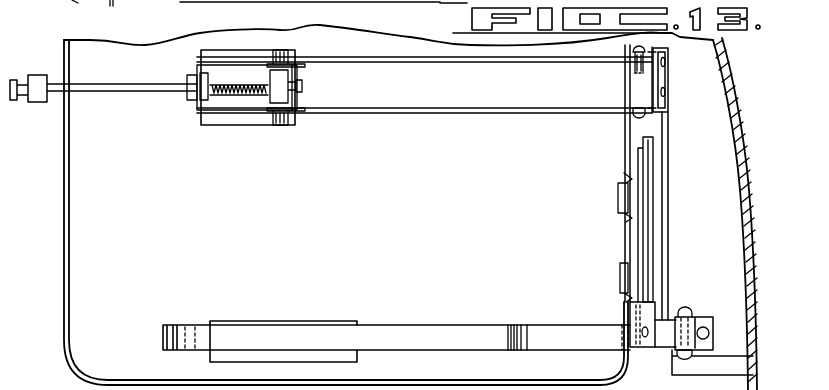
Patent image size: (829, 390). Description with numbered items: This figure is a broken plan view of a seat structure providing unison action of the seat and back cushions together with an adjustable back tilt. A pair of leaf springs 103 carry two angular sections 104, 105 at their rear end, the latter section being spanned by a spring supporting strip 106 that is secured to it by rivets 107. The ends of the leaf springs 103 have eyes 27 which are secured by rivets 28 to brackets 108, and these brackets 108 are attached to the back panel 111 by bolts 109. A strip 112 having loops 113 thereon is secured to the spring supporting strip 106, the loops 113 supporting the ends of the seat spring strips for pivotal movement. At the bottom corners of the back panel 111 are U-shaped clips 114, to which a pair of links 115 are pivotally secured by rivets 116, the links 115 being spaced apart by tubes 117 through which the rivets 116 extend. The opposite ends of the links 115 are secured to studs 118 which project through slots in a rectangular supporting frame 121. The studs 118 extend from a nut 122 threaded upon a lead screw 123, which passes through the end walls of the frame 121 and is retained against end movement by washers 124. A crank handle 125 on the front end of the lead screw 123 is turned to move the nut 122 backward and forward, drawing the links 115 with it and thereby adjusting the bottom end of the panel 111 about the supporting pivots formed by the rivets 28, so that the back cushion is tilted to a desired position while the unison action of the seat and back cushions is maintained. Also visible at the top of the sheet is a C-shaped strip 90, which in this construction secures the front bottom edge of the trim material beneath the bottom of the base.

The eyes 27 is at (707, 320).
The rivets 28 is at (700, 313).
The C-shaped strip 90 is at (76, 2).
The leaf springs 103 is at (440, 330).
The angular section 104 is at (582, 295).
The angular section 105 is at (665, 325).
The spring supporting strip 106 is at (642, 348).
The rivets 107 is at (642, 330).
The brackets 108 is at (707, 317).
The bolts 109 is at (710, 333).
The panel 111 is at (731, 202).
The strip 112 is at (646, 177).
The loops 113 is at (618, 193).
The U-shaped clips 114 is at (669, 80).
The links 115 is at (493, 110).
The rivets 116 is at (637, 112).
The tubes 117 is at (639, 84).
The studs 118 is at (290, 52).
The rectangular supporting frame 121 is at (196, 124).
The nut 122 is at (300, 85).
The lead screw 123 is at (240, 93).
The washers 124 is at (190, 106).
The crank handle 125 is at (40, 100).